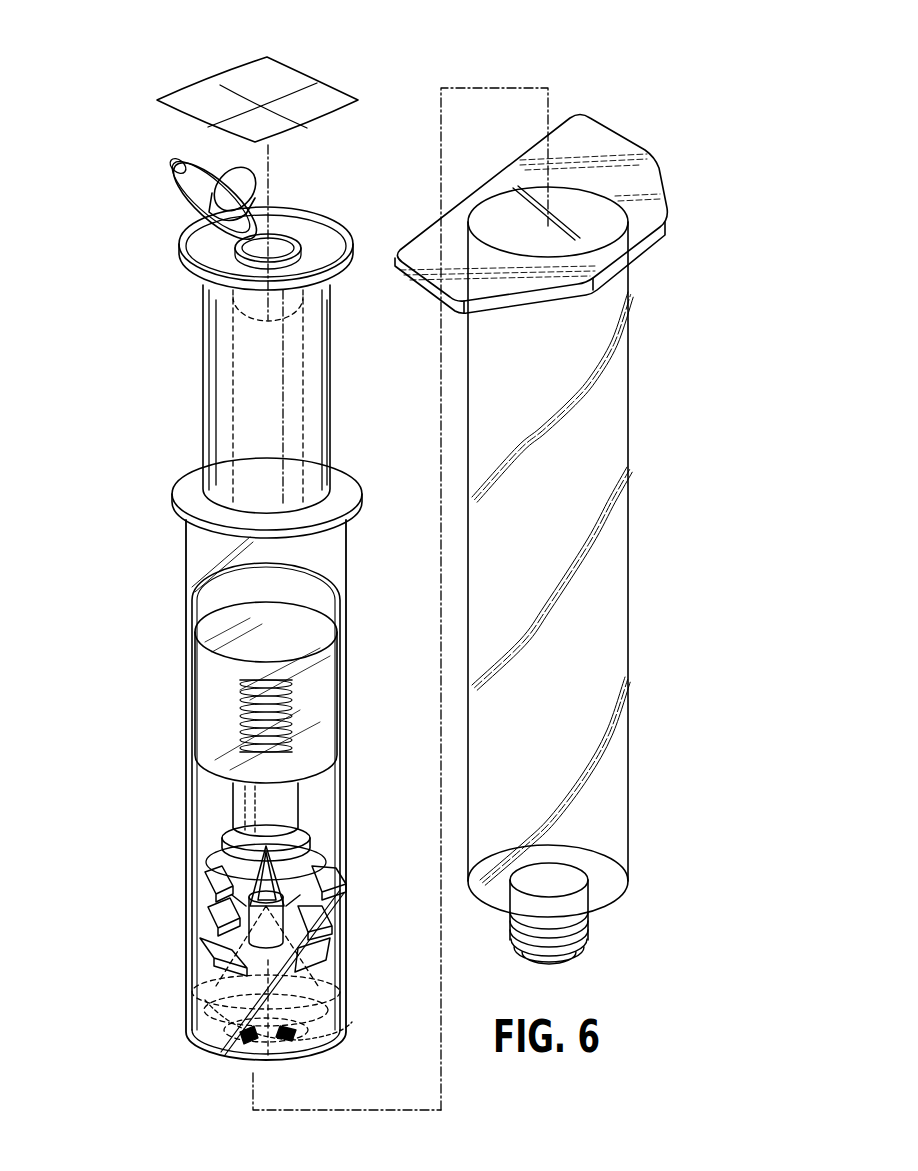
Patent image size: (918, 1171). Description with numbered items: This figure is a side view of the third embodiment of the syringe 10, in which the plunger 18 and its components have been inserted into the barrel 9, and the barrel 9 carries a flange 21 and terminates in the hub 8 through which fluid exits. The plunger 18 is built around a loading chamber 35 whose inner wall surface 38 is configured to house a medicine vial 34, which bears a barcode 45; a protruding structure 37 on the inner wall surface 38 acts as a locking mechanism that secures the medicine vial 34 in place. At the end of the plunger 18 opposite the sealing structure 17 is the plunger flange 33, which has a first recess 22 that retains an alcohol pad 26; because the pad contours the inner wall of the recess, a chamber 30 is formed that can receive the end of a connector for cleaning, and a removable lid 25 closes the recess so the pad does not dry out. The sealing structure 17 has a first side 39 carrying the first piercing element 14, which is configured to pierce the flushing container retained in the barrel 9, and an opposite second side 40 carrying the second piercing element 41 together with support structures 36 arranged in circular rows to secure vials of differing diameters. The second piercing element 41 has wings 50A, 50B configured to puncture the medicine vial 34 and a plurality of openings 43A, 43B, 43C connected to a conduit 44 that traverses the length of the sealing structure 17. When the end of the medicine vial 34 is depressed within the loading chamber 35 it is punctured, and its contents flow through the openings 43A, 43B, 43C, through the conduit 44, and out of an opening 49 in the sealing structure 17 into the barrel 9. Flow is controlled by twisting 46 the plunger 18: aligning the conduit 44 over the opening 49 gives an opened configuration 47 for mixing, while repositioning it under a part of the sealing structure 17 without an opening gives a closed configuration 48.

The hub 8 is at (590, 922).
The barrel 9 is at (606, 820).
The syringe 10 is at (725, 96).
The first piercing element 14 is at (268, 1073).
The sealing structure 17 is at (181, 1012).
The plunger 18 is at (186, 665).
The flange 21 is at (648, 176).
The first recess 22 is at (320, 288).
The removable lid 25 is at (205, 201).
The alcohol pad 26 is at (282, 80).
The chamber 30 is at (284, 247).
The flange 33 is at (183, 272).
The medicine vial 34 is at (299, 776).
The loading chamber 35 is at (278, 595).
The support structures 36 is at (216, 956).
The protruding structure 37 is at (207, 869).
The inner wall surface 38 is at (312, 590).
The first side 39 is at (230, 1058).
The second side 40 is at (330, 945).
The second piercing element 41 is at (326, 892).
The opening 43A is at (338, 866).
The opening 43B is at (270, 916).
The opening 43C is at (302, 927).
The conduit 44 is at (192, 994).
The barcode 45 is at (296, 712).
The twisting 46 is at (258, 1052).
The opened configuration 47 is at (312, 1055).
The closed configuration 48 is at (182, 1034).
The opening 49 is at (354, 1034).
The wing 50A is at (214, 910).
The wing 50B is at (305, 935).